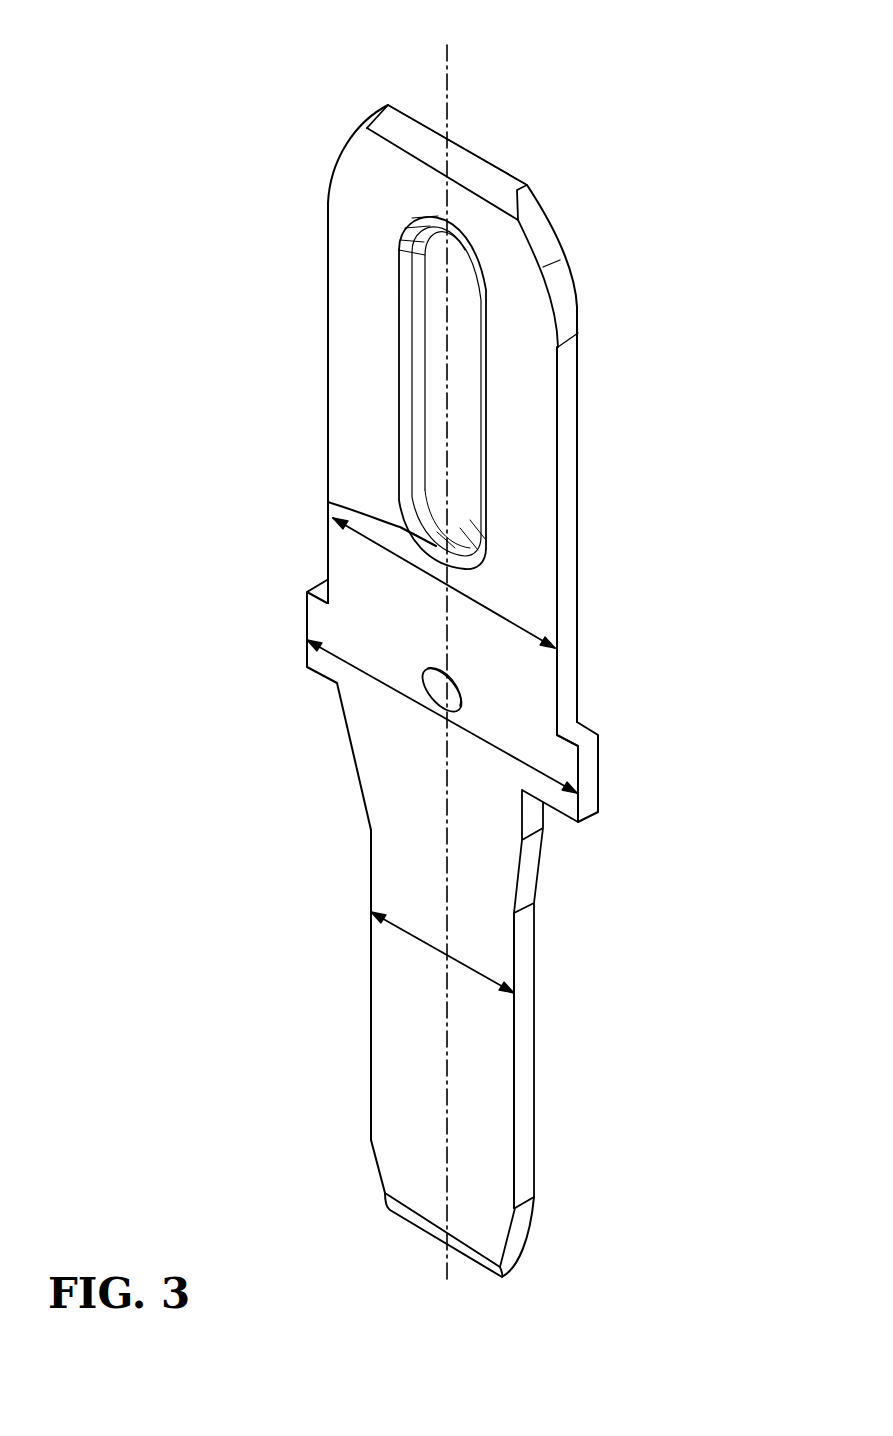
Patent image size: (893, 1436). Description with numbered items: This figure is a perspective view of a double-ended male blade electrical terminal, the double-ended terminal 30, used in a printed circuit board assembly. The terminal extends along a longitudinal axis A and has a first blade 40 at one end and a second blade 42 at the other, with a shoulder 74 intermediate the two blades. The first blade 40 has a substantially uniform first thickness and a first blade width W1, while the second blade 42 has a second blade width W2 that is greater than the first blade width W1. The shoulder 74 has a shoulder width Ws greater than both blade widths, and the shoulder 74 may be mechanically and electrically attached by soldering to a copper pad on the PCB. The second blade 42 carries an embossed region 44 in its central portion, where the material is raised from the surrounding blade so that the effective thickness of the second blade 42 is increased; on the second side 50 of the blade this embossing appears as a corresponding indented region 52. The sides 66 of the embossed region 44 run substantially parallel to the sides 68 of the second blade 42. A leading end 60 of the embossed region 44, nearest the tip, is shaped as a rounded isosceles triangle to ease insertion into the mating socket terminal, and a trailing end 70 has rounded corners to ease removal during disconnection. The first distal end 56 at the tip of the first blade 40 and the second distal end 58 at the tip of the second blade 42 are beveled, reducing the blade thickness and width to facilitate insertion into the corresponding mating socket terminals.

The double-ended terminal 30 is at (303, 70).
The first blade 40 is at (390, 1093).
The second blade 42 is at (532, 377).
The embossed region 44 is at (482, 428).
The second side 50 is at (350, 360).
The indented region 52 is at (443, 287).
The first distal end 56 is at (423, 1225).
The second distal end 58 is at (490, 165).
The leading end 60 is at (408, 221).
The sides of the embossed region 66 is at (397, 283).
The sides of the second blade 68 is at (328, 404).
The trailing end 70 is at (328, 502).
The shoulder 74 is at (315, 612).
The second blade width W2 is at (307, 592).
The shoulder width Ws is at (352, 686).
The first blade width W1 is at (417, 940).
The longitudinal axis A is at (445, 1270).